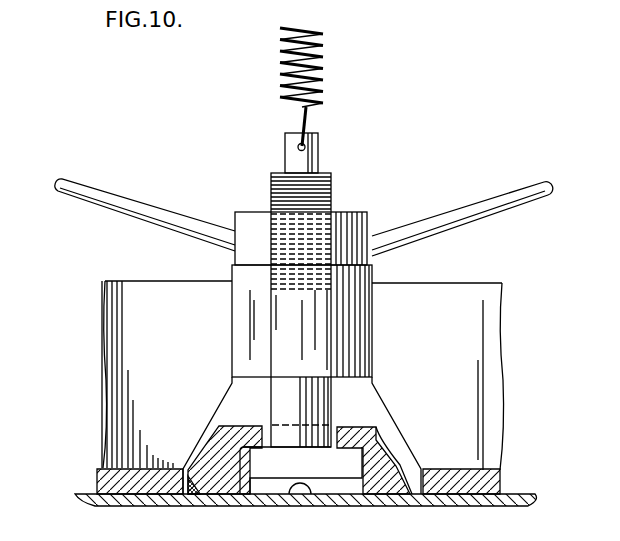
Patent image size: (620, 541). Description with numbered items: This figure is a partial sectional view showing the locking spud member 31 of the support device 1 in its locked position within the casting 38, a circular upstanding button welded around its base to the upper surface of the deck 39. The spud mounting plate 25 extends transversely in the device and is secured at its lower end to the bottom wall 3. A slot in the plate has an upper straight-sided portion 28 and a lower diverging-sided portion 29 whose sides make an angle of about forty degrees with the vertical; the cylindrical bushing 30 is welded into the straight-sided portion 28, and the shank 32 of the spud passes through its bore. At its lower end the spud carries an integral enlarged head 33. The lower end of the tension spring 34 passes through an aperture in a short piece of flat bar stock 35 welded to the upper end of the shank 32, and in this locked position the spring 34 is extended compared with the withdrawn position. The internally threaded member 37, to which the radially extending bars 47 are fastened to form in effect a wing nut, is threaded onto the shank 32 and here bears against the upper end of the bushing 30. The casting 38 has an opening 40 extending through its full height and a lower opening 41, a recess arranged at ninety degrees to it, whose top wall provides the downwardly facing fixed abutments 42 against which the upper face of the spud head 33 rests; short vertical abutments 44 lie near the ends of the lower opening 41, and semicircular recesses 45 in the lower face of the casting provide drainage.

The support device 1 is at (105, 333).
The bottom wall 3 is at (478, 472).
The spud mounting plate 25 is at (497, 326).
The upper straight-sided portion 28 is at (232, 312).
The lower diverging-sided portion 29 is at (378, 411).
The cylindrical bushing 30 is at (358, 337).
The locking spud member 31 is at (333, 186).
The shank 32 is at (333, 393).
The head 33 is at (265, 478).
The tension spring 34 is at (322, 51).
The flat bar stock 35 is at (318, 140).
The internally threaded member 37 is at (246, 216).
The casting 38 is at (236, 421).
The deck 39 is at (515, 497).
The opening 40 is at (268, 425).
The lower opening 41 is at (240, 490).
The fixed abutments 42 is at (236, 455).
The abutment 44 is at (362, 458).
The arcuate recesses 45 is at (300, 499).
The bars 47 is at (93, 201).